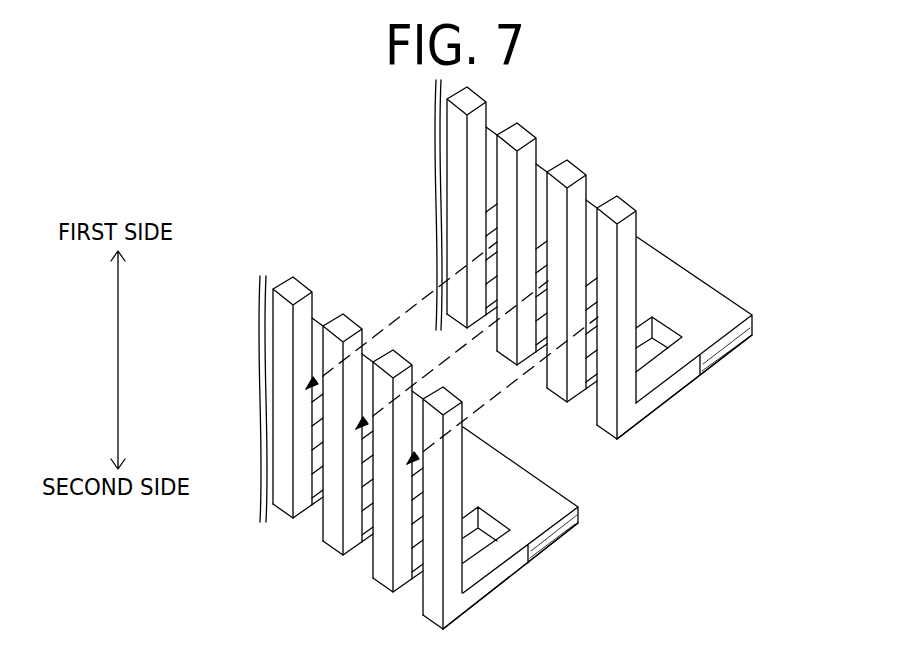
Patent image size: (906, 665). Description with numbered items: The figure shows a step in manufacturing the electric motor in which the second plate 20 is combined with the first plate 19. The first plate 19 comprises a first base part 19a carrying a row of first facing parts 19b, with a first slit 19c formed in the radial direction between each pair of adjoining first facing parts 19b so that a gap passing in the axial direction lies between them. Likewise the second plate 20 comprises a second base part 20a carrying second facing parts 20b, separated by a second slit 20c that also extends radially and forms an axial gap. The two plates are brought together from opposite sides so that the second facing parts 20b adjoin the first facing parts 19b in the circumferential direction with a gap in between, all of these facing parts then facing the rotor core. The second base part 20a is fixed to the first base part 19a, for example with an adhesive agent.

The first plate 19 is at (538, 586).
The first base part 19a is at (537, 507).
The first facing part 19b is at (440, 545).
The first slit 19c is at (415, 597).
The second plate 20 is at (703, 396).
The second base part 20a is at (692, 300).
The second facing part 20b is at (610, 282).
The second slit 20c is at (487, 343).